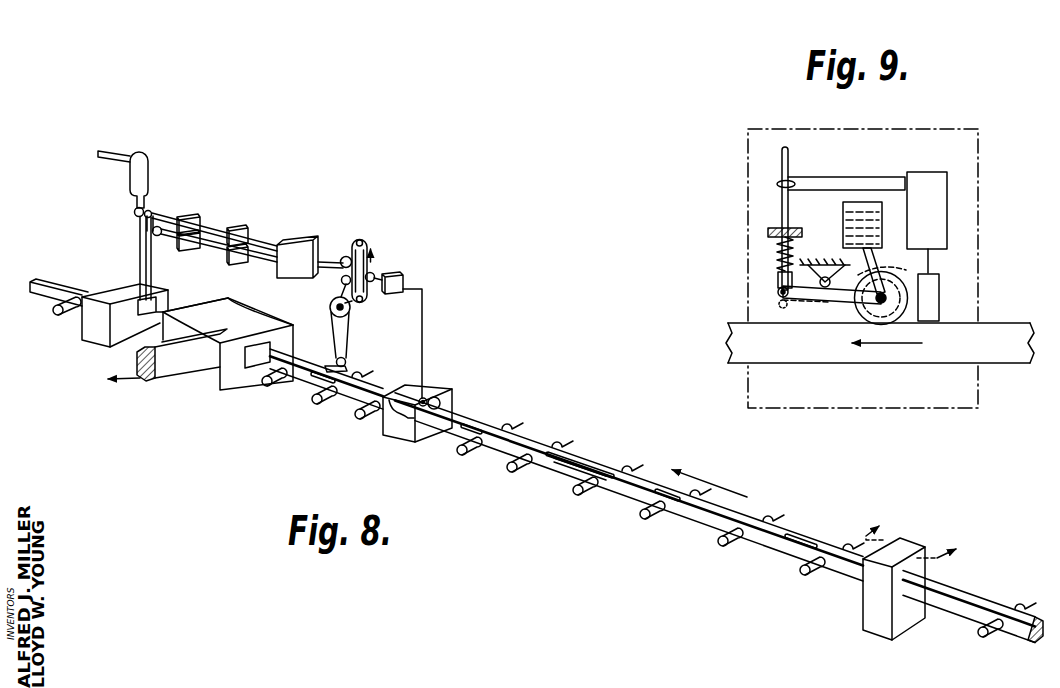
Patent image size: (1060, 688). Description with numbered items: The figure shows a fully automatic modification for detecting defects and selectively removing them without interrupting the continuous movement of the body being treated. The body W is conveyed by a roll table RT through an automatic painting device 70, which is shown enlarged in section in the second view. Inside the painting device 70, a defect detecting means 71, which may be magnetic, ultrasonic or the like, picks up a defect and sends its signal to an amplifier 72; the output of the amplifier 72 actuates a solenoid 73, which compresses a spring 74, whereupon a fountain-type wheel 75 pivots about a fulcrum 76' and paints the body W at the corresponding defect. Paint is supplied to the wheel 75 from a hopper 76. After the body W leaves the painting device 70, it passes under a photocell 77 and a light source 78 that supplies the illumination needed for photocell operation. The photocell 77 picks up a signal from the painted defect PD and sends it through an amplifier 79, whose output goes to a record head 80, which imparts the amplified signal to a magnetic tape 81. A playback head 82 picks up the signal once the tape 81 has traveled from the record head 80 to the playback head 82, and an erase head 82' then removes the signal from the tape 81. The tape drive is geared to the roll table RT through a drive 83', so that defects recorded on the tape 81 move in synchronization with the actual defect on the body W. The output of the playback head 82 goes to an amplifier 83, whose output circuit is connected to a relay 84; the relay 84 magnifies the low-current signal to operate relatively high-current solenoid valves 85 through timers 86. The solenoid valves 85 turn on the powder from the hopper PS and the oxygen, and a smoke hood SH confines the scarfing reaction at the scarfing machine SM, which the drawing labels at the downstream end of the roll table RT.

In FIG. 8, the automatic painting device 70 is at (876, 607).
In FIG. 9, the automatic painting device 70 is at (982, 289).
In FIG. 9, the defect detecting means 71 is at (940, 299).
In FIG. 9, the amplifier 72 is at (925, 185).
In FIG. 9, the solenoid 73 is at (777, 184).
In FIG. 9, the spring 74 is at (777, 252).
In FIG. 9, the fountain-type wheel 75 is at (898, 276).
In FIG. 9, the hopper 76 is at (849, 248).
In FIG. 9, the fulcrum 76' is at (809, 331).
In FIG. 8, the photocell 77 is at (428, 400).
In FIG. 8, the light source 78 is at (441, 403).
In FIG. 8, the amplifier 79 is at (405, 280).
In FIG. 8, the record head 80 is at (376, 276).
In FIG. 8, the tape 81 is at (367, 246).
In FIG. 8, the playback head 82 is at (353, 237).
In FIG. 8, the erase head 82' is at (324, 292).
In FIG. 8, the amplifier 83 is at (299, 244).
In FIG. 8, the drive 83' is at (361, 334).
In FIG. 8, the relay 84 is at (238, 228).
In FIG. 8, the solenoid valves 85 is at (152, 231).
In FIG. 8, the timers 86 is at (190, 217).
In FIG. 8, the hopper PS is at (145, 172).
In FIG. 8, the smoke hood SH is at (210, 378).
In FIG. 8, the scarfing machine SM is at (100, 337).
In FIG. 8, the roll table RT is at (475, 450).
In FIG. 8, the painted defect PD is at (586, 462).
In FIG. 8, the body W is at (613, 491).
In FIG. 9, the body W is at (1012, 356).